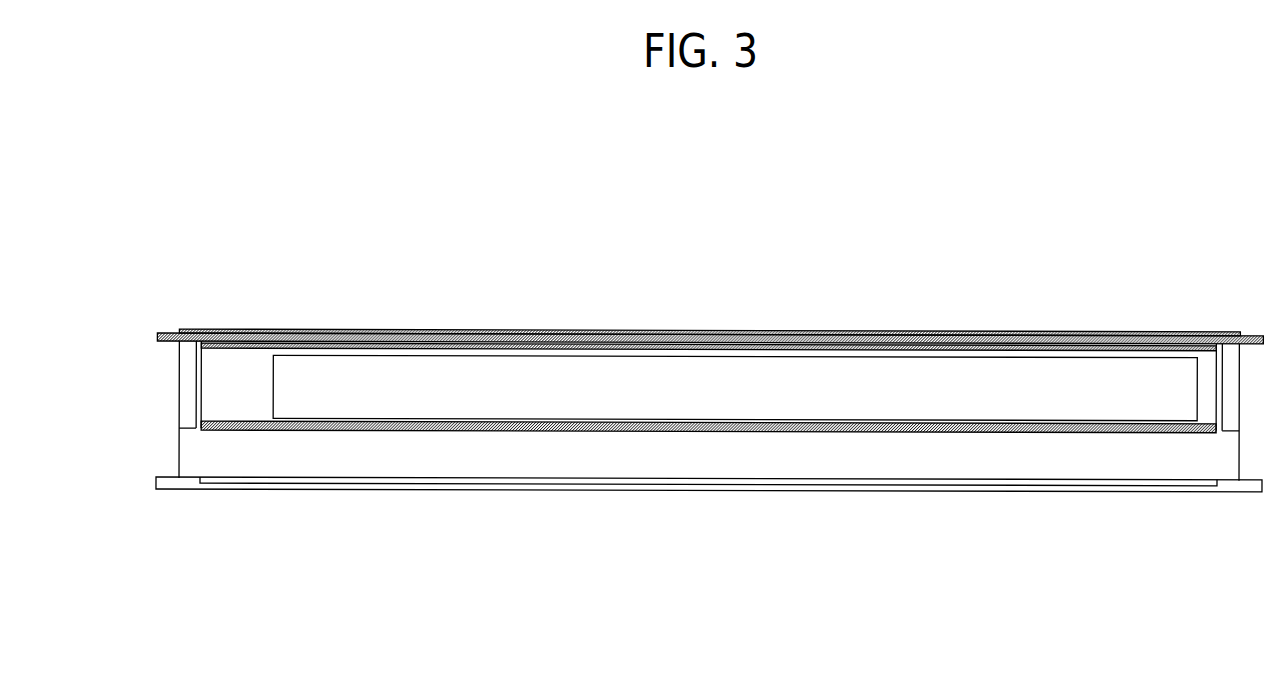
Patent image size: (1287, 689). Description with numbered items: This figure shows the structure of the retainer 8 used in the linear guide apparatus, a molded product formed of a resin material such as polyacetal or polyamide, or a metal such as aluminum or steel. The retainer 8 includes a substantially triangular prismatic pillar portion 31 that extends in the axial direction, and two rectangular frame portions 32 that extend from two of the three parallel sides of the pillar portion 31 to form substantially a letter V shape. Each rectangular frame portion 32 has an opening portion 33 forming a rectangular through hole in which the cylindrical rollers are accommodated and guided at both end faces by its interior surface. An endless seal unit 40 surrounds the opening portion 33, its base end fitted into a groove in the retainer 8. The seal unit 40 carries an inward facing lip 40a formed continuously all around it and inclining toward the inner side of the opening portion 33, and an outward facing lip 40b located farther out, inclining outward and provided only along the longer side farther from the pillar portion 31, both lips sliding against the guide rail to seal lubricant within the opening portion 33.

The retainer 8 is at (539, 521).
The prismatic pillar portion 31 is at (200, 455).
The rectangular frame portion 32 is at (220, 385).
The opening portion 33 is at (1045, 372).
The seal unit 40 is at (960, 429).
The inward facing lip 40a is at (800, 428).
The outward facing lip 40b is at (172, 330).